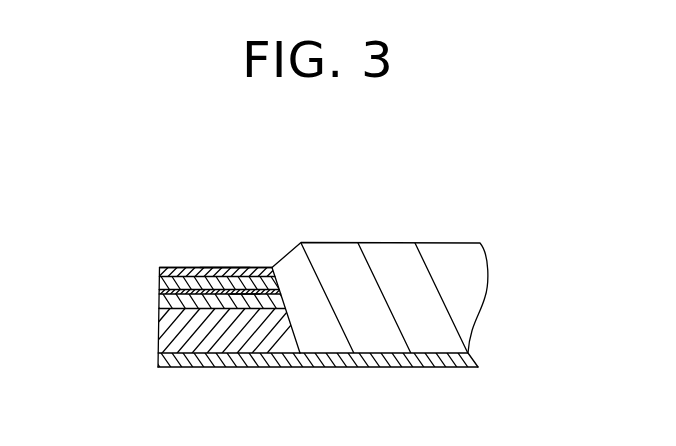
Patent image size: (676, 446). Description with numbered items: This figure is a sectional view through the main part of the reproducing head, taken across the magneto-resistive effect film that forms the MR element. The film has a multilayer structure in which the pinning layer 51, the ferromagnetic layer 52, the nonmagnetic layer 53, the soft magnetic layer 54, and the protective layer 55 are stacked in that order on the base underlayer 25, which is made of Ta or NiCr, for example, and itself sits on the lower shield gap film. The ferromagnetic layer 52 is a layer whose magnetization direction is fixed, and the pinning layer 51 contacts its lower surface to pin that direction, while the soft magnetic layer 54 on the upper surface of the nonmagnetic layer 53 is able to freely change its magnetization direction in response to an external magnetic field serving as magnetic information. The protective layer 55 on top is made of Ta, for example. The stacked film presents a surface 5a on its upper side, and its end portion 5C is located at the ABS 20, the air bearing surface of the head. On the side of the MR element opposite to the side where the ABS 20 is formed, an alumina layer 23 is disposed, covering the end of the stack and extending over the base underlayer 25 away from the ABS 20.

The ABS (Air Bearing Surface) 20 is at (150, 342).
The alumina layer 23 is at (443, 242).
The base underlayer 25 is at (437, 365).
The surface of the magneto-resistive effect film 5a is at (222, 266).
The end portion of the magneto-resistive effect film 5C is at (157, 325).
The pinning layer 51 is at (208, 335).
The ferromagnetic layer 52 is at (240, 300).
The nonmagnetic layer 53 is at (157, 291).
The soft magnetic layer 54 is at (157, 281).
The protective layer 55 is at (158, 266).